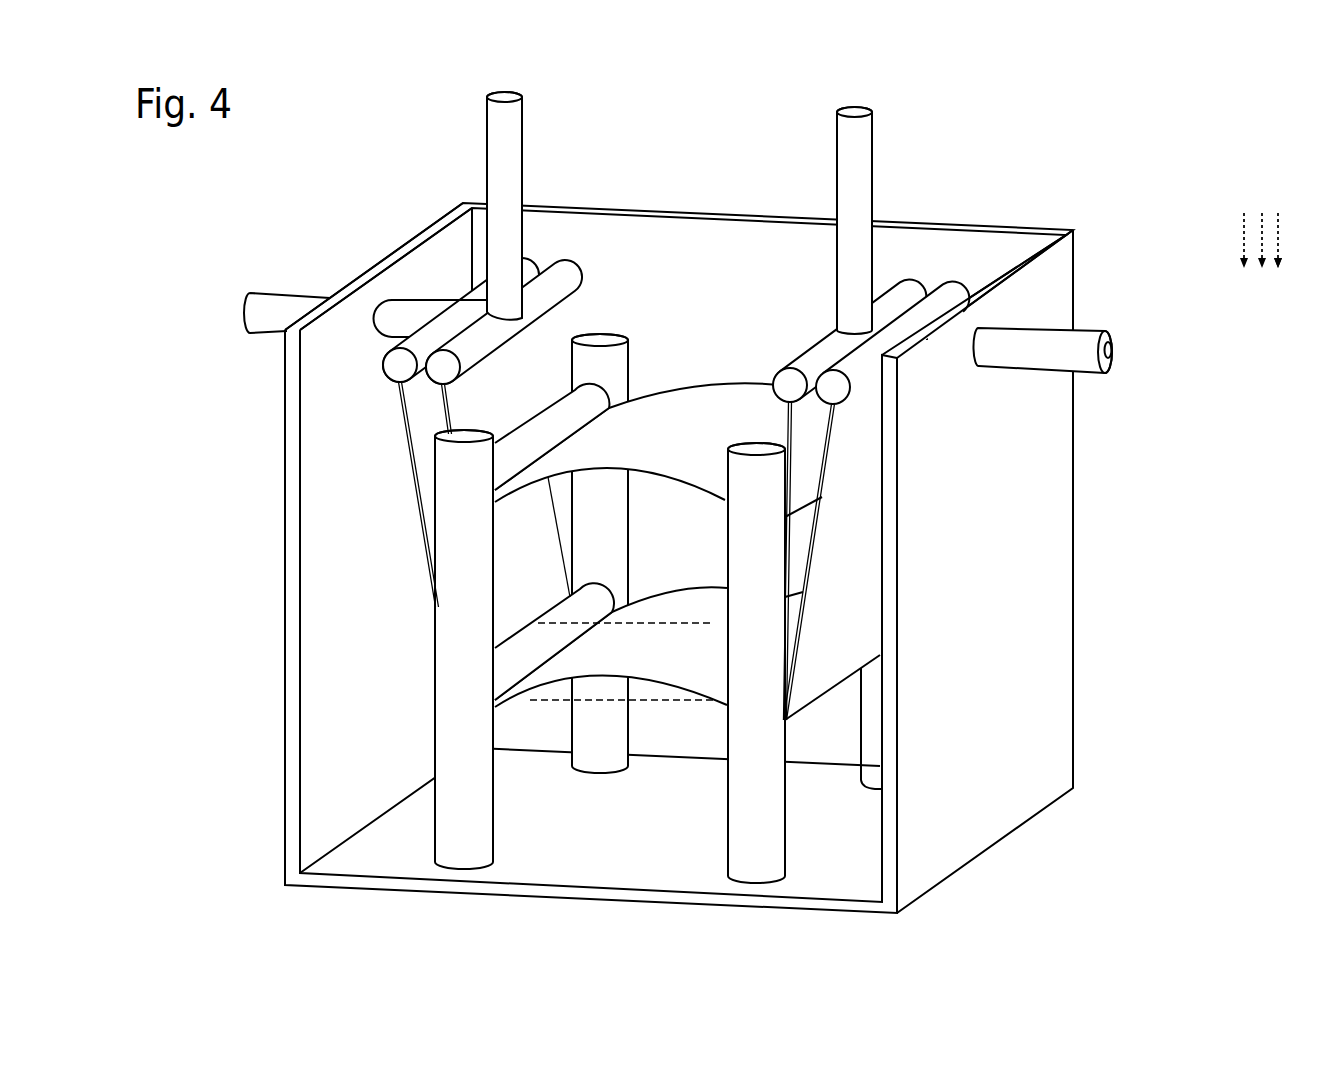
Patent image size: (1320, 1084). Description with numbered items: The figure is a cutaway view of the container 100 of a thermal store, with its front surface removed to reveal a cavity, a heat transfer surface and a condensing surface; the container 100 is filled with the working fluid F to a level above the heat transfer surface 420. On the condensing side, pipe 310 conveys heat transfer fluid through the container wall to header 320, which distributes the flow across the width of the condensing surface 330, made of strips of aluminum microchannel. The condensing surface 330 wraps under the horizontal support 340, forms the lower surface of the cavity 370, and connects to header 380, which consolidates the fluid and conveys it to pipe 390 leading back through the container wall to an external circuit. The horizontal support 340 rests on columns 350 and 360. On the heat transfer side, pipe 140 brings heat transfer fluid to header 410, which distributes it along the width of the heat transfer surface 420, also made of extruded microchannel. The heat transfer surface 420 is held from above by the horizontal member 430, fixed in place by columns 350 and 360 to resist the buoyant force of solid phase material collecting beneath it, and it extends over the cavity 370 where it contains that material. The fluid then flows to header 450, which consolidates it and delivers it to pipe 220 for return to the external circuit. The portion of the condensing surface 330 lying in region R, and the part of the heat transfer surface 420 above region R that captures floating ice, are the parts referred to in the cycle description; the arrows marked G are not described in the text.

The container 100 is at (368, 240).
The pipe 140 is at (535, 133).
The pipe 220 is at (818, 177).
The pipe 310 is at (218, 313).
The header 320 is at (370, 382).
The condensing surface 330 is at (410, 515).
The horizontal support 340 is at (554, 641).
The column 350 is at (452, 670).
The column 360 is at (630, 333).
The cavity 370 is at (770, 663).
The header 380 is at (955, 280).
The pipe 390 is at (1113, 323).
The header 410 is at (577, 272).
The heat transfer surface 420 is at (540, 350).
The horizontal member 430 is at (552, 437).
The header 450 is at (810, 328).
The region R is at (650, 688).
The working fluid F is at (350, 778).
The gravity direction G is at (1276, 240).